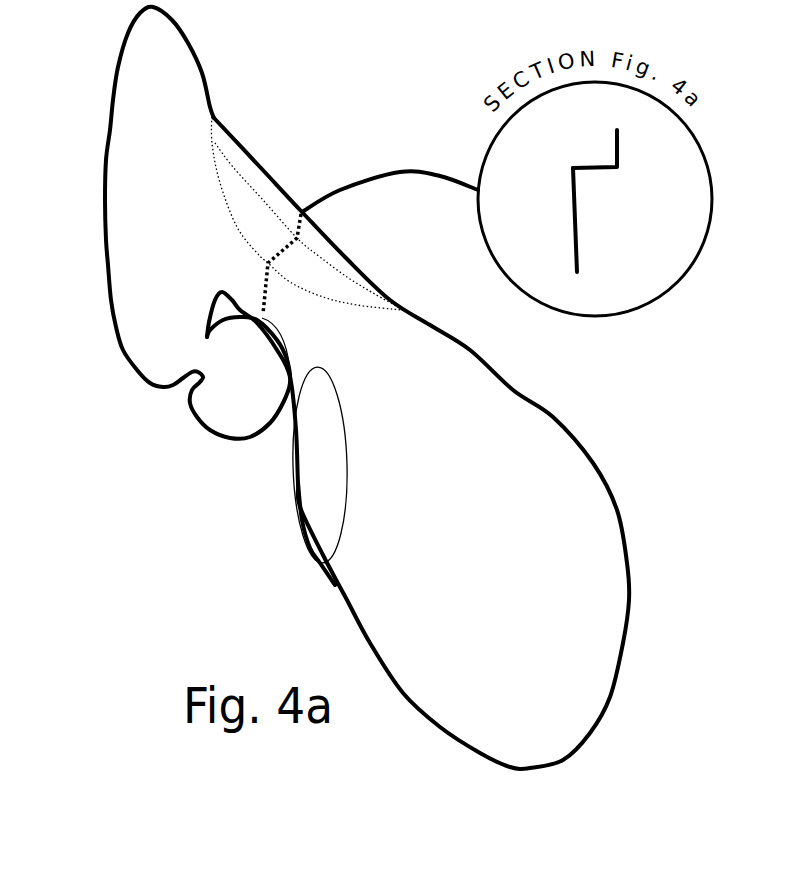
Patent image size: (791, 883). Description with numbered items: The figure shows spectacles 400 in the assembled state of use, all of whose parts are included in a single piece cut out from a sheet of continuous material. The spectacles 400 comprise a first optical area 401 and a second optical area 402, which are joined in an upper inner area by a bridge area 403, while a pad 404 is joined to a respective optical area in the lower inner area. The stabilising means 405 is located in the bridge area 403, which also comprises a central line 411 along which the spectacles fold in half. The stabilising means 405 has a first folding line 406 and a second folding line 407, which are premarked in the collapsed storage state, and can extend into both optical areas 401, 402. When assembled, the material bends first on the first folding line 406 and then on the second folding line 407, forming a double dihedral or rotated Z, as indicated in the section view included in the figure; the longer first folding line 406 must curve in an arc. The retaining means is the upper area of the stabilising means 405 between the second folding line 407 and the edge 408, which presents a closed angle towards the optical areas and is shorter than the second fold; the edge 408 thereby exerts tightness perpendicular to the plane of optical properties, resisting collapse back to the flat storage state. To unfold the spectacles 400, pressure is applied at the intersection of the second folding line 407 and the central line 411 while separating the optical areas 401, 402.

The spectacles 400 is at (334, 388).
The first optical area 401 is at (508, 435).
The second optical area 402 is at (143, 238).
The bridge area 403 is at (290, 310).
The pad 404 is at (237, 405).
The stabilising means 405 is at (250, 207).
The first folding line 406 is at (215, 145).
The second folding line 407 is at (252, 170).
The edge 408 is at (313, 223).
The central line 411 is at (267, 277).